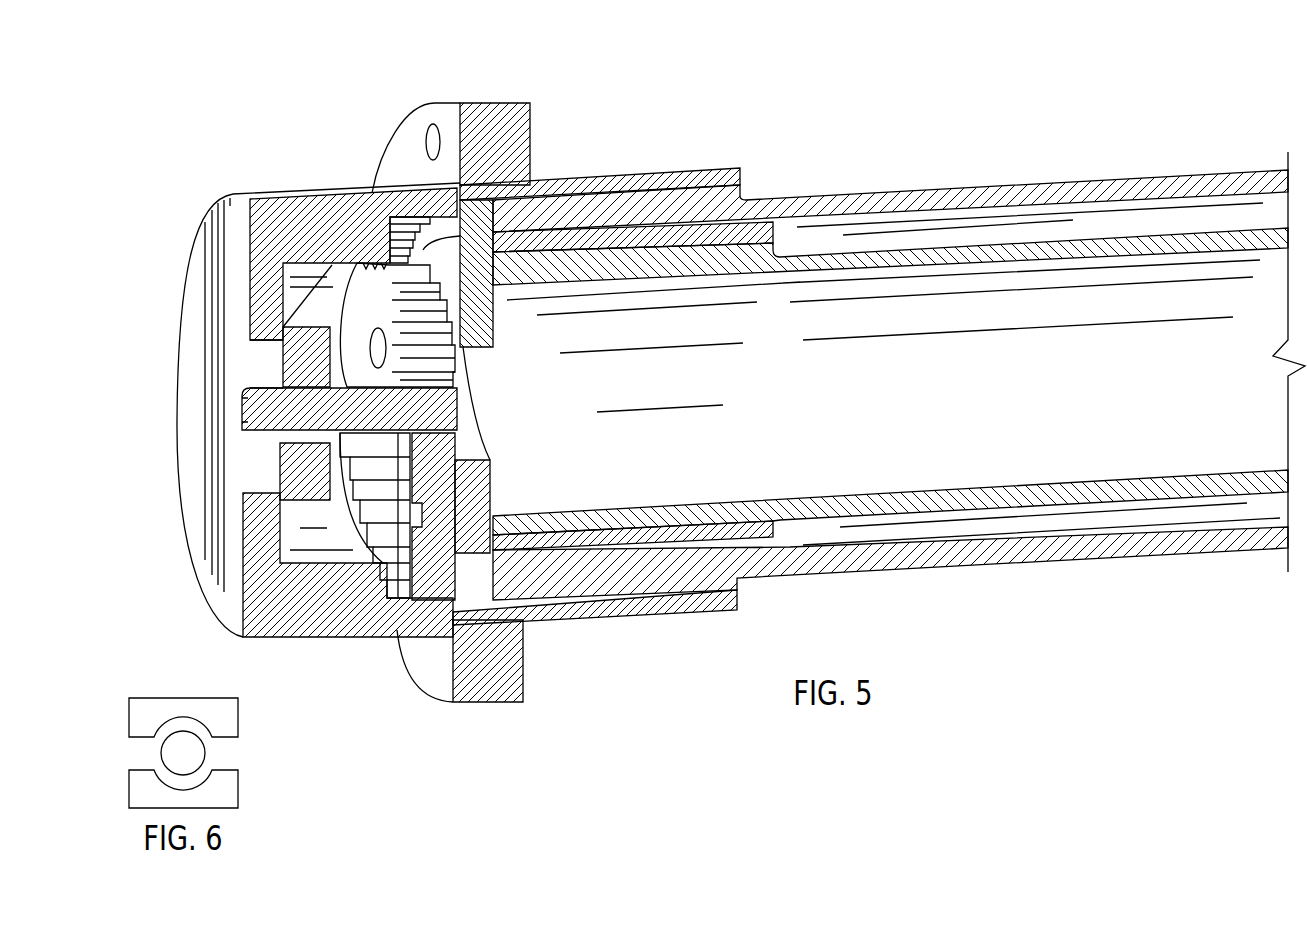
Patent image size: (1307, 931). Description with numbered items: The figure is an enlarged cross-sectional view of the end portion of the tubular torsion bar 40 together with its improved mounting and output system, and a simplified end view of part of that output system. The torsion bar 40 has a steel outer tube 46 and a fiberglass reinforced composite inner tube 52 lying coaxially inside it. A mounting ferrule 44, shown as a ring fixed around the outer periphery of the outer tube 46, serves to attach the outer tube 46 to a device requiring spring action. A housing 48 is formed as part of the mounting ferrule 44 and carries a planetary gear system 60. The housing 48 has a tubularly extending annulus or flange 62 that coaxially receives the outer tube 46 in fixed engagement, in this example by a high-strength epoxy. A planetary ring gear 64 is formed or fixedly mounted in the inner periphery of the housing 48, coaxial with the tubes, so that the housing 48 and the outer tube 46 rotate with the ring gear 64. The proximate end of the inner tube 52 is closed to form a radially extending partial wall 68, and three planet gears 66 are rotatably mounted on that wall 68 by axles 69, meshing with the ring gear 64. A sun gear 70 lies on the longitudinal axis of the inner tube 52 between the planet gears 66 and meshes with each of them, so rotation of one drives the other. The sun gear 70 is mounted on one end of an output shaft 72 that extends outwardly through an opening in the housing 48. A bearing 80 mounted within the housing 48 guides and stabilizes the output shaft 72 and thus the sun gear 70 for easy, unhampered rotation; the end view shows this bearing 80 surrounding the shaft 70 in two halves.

In FIG. 5, the tubular torsion bar 40 is at (1063, 625).
In FIG. 5, the mounting ferrule 44 is at (500, 108).
In FIG. 5, the outer tube 46 is at (983, 193).
In FIG. 5, the housing 48 is at (316, 205).
In FIG. 5, the inner tube 52 is at (974, 258).
In FIG. 5, the planetary gear system 60 is at (276, 365).
In FIG. 5, the flange 62 is at (670, 176).
In FIG. 5, the planetary ring gear 64 is at (374, 300).
In FIG. 5, the planet gears 66 is at (370, 290).
In FIG. 5, the partial wall 68 is at (480, 325).
In FIG. 5, the axles 69 is at (433, 510).
In FIG. 5, the sun gear 70 is at (445, 410).
In FIG. 6, the sun gear 70 is at (190, 758).
In FIG. 5, the output shaft 72 is at (262, 415).
In FIG. 5, the bearing 80 is at (303, 487).
In FIG. 6, the bearing 80 is at (222, 717).